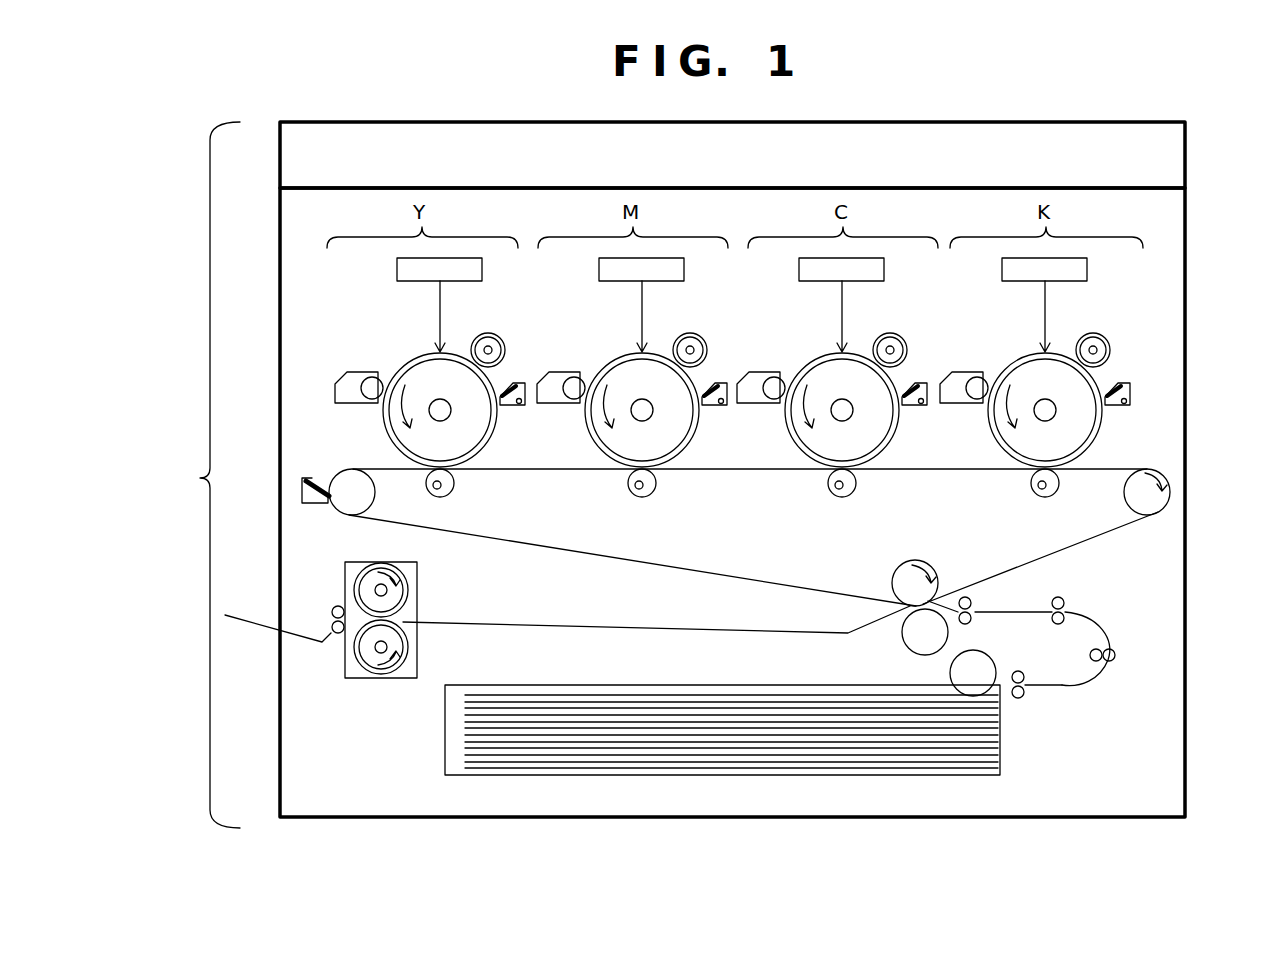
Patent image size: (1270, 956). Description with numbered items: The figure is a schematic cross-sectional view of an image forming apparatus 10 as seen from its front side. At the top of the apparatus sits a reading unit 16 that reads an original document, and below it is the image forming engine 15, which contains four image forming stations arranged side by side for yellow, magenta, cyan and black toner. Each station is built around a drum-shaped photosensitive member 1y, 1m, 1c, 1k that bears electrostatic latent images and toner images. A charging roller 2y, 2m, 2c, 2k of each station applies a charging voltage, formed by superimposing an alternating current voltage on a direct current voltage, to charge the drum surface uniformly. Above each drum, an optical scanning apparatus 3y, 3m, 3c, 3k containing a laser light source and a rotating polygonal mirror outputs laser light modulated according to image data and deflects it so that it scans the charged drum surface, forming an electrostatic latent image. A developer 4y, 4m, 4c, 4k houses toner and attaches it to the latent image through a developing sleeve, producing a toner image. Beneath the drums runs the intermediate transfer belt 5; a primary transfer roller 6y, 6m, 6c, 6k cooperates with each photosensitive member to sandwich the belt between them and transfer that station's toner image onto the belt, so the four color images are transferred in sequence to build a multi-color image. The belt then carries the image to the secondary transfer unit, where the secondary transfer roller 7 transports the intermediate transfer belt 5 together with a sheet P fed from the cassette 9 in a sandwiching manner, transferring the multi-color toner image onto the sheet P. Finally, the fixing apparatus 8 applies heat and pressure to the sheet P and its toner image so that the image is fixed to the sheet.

The photosensitive member 1y is at (386, 434).
The photosensitive member 1m is at (611, 410).
The photosensitive member 1c is at (813, 410).
The photosensitive member 1k is at (1016, 410).
The charging roller 2y is at (499, 337).
The charging roller 2m is at (710, 331).
The charging roller 2c is at (906, 331).
The charging roller 2k is at (1109, 331).
The optical scanning apparatus 3y is at (421, 282).
The optical scanning apparatus 3m is at (636, 305).
The optical scanning apparatus 3c is at (838, 305).
The optical scanning apparatus 3k is at (1041, 305).
The developer 4y is at (346, 384).
The developer 4m is at (553, 367).
The developer 4c is at (754, 367).
The developer 4k is at (957, 367).
The intermediate transfer belt 5 is at (762, 579).
The primary transfer roller 6y is at (454, 488).
The primary transfer roller 6m is at (675, 493).
The primary transfer roller 6c is at (871, 493).
The primary transfer roller 6k is at (1074, 493).
The secondary transfer roller 7 is at (905, 638).
The fixing apparatus 8 is at (418, 603).
The cassette 9 is at (560, 685).
The image forming apparatus 10 is at (199, 475).
The image forming engine 15 is at (1180, 240).
The reading unit 16 is at (1178, 160).
The sheet P is at (749, 693).